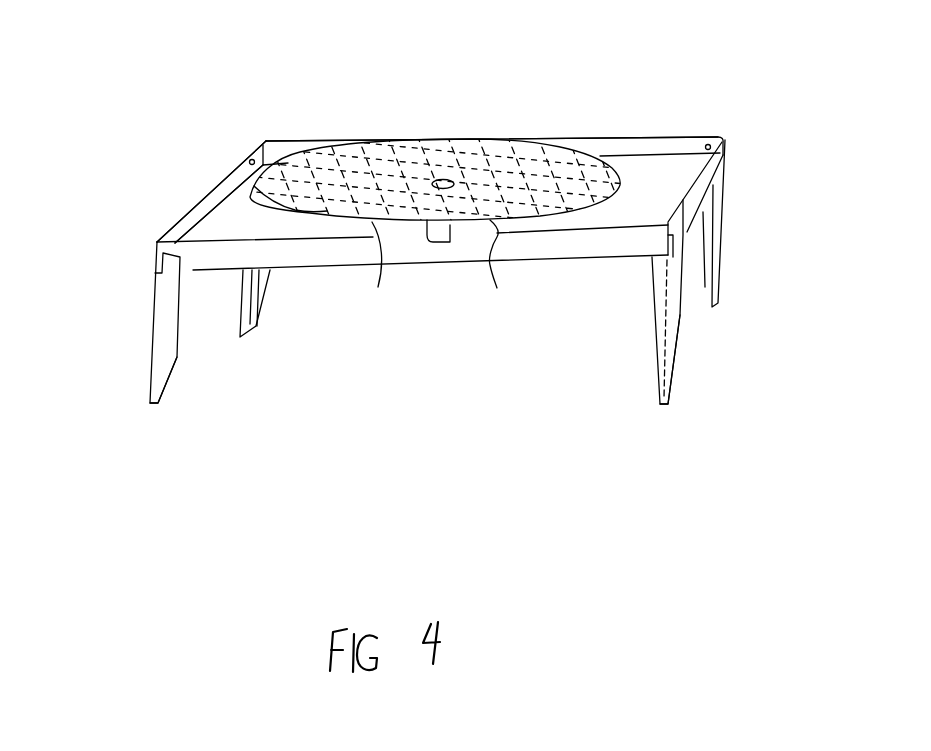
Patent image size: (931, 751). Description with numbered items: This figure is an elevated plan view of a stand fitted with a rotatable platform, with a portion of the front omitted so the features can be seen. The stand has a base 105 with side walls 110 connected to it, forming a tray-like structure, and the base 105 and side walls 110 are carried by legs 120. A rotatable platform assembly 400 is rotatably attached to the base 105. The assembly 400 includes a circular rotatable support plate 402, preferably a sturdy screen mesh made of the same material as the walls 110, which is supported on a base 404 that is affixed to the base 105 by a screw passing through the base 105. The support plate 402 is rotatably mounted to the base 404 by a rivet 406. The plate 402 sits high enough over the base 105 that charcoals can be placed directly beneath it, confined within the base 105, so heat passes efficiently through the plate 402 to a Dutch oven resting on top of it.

The rotatable platform assembly 400 is at (447, 128).
The rotatable support plate 402 is at (364, 140).
The base 404 is at (450, 228).
The rivet 406 is at (443, 179).
The base 105 is at (224, 224).
The side walls 110 is at (727, 160).
The legs 120 is at (152, 326).